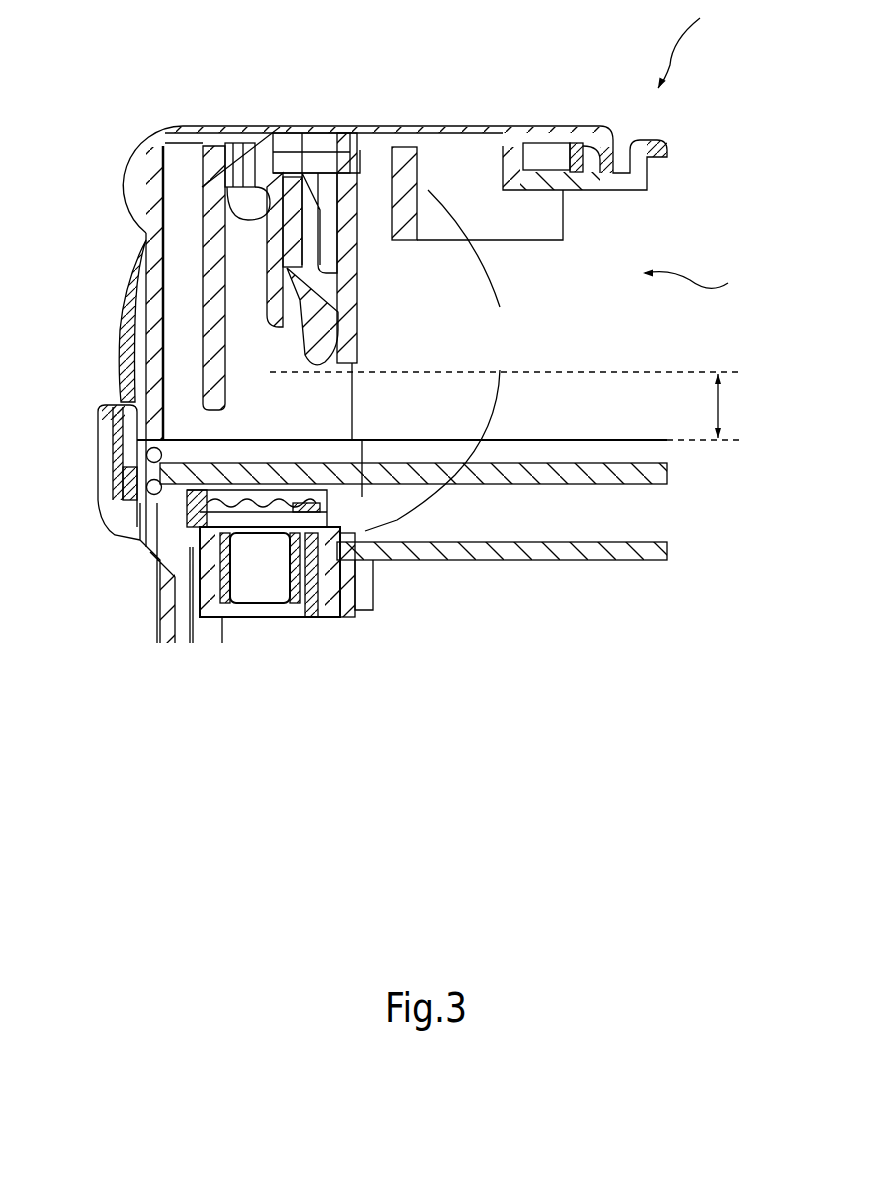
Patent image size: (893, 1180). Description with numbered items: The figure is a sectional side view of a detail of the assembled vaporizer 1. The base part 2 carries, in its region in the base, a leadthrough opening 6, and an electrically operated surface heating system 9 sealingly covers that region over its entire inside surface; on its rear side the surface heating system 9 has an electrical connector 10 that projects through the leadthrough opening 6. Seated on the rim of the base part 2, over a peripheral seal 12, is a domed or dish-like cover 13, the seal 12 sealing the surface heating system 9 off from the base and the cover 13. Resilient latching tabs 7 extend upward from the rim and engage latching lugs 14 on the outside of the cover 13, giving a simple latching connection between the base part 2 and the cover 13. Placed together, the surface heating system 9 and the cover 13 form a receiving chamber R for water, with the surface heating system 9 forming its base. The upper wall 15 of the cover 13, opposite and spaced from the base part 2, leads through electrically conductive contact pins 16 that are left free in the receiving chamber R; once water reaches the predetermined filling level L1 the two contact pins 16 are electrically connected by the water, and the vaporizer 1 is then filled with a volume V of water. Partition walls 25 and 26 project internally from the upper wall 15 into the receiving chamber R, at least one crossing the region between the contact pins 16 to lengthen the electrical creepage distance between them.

The vaporizer 1 is at (687, 44).
The base part 2 is at (613, 550).
The leadthrough opening 6 is at (288, 630).
The latching tab 7 is at (98, 437).
The surface heating system 9 is at (669, 474).
The electrical connector 10 is at (275, 625).
The peripheral seal 12 is at (162, 458).
The cover 13 is at (667, 147).
The latching lug 14 is at (127, 480).
The upper wall 15 is at (490, 128).
The contact pin 16 is at (321, 343).
The partition wall 25 is at (207, 303).
The partition wall 26 is at (400, 190).
The volume of water V is at (586, 393).
The predetermined filling level L1 is at (519, 400).
The receiving chamber R is at (693, 280).